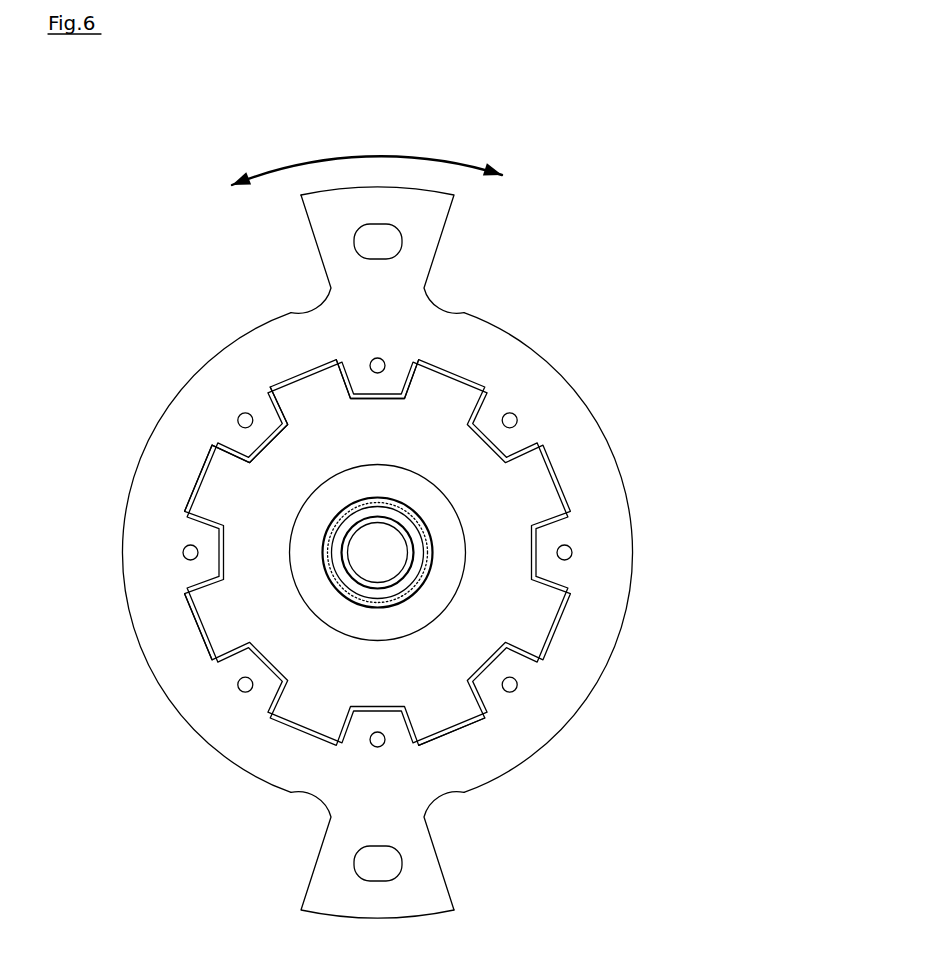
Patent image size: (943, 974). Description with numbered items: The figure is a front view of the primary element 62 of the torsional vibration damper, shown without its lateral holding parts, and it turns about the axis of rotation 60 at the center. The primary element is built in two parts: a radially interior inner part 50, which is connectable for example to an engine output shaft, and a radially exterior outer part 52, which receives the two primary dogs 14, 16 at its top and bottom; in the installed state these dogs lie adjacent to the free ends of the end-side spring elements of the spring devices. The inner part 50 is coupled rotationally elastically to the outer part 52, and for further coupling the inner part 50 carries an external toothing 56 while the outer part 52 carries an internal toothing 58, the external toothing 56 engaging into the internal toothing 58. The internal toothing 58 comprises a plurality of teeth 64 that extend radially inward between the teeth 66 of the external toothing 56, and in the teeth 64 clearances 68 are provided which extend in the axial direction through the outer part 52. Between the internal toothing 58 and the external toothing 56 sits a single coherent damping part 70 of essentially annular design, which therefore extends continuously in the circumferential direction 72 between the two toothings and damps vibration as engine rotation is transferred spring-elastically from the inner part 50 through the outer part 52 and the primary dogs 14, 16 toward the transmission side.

The primary dog 14 is at (412, 237).
The primary dog 16 is at (410, 873).
The inner part 50 is at (285, 660).
The outer part 52 is at (257, 755).
The external toothing 56 is at (452, 727).
The internal toothing 58 is at (528, 679).
The axis of rotation 60 is at (377, 552).
The primary element 62 is at (377, 552).
The teeth 64 is at (360, 373).
The teeth 66 is at (220, 485).
The clearances 68 is at (239, 415).
The damping part 70 is at (462, 372).
The circumferential direction 72 is at (367, 150).